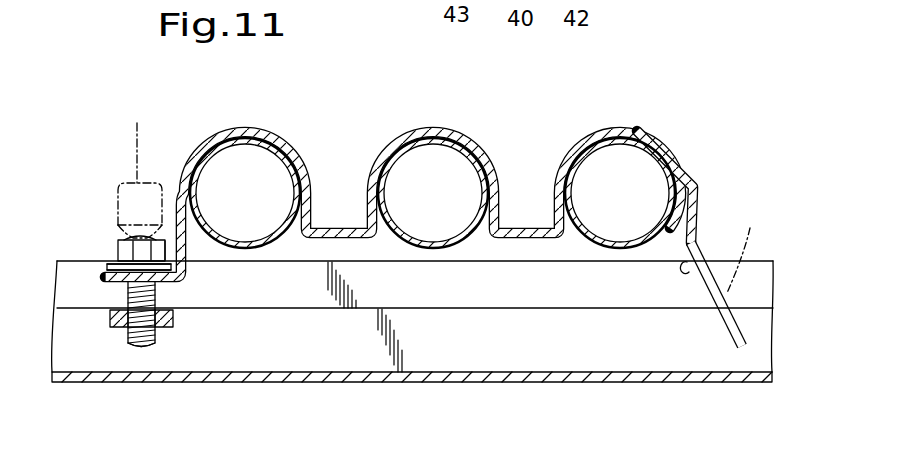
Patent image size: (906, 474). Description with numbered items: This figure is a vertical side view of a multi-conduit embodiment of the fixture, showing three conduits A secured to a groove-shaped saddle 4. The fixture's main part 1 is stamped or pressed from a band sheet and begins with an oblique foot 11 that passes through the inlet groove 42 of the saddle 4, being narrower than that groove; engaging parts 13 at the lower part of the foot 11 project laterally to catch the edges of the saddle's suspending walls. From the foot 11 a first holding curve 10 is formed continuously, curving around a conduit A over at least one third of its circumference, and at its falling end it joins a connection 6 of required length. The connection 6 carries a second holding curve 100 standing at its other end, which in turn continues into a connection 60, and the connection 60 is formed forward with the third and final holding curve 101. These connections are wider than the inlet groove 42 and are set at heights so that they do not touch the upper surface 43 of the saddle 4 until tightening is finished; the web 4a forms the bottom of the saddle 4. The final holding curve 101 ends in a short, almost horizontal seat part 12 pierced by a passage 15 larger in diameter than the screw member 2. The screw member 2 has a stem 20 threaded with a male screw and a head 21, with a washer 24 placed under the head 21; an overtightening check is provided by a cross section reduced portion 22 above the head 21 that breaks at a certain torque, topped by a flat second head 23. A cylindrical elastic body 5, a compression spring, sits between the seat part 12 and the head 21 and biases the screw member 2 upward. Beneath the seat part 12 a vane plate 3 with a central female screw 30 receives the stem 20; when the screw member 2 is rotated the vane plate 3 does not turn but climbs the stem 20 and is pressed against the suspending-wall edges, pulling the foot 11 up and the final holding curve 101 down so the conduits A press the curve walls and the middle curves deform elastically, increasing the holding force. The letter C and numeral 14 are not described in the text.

The main part 1 is at (678, 153).
The first holding curve 10 is at (647, 130).
The foot 11 is at (697, 245).
The engaging part 13 is at (744, 249).
The clamp C is at (668, 140).
The conduit A is at (268, 147).
The arcuate holding portion 14 is at (437, 132).
The third holding curve 101 is at (230, 127).
The second holding curve 100 is at (472, 143).
The connection 60 is at (332, 233).
The connection 6 is at (523, 230).
The saddle 4 is at (495, 382).
The web 4a is at (613, 382).
The inlet groove 42 is at (670, 302).
The upper surface 43 is at (524, 263).
The screw member 2 is at (128, 290).
The stem 20 is at (125, 347).
The vane plate 3 is at (163, 323).
The female screw 30 is at (133, 323).
The washer 24 is at (117, 243).
The cross section reduced portion 22 is at (165, 240).
The second head 23 is at (140, 166).
The head 21 is at (107, 262).
The cylindrical elastic body 5 is at (105, 263).
The seat part 12 is at (112, 270).
The passage 15 is at (112, 280).